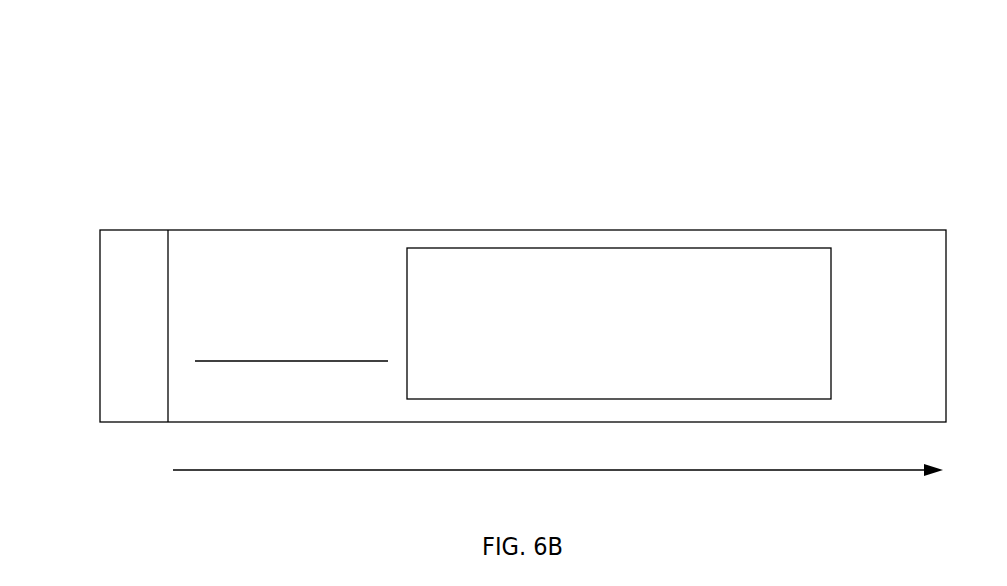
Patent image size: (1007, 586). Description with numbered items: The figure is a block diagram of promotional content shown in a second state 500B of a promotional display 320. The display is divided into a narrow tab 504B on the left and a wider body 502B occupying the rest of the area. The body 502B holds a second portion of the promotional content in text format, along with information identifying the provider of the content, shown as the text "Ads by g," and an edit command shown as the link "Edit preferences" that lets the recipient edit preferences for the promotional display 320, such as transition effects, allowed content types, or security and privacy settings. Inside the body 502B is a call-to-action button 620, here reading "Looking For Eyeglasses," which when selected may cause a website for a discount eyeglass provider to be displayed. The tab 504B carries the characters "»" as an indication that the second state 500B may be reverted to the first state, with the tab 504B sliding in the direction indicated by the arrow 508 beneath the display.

The second state 500B is at (104, 100).
The tab 504B is at (168, 200).
The body 502B is at (946, 200).
The promotional display 320 is at (100, 327).
The call-to-action button 620 is at (831, 324).
The arrow 508 is at (534, 474).